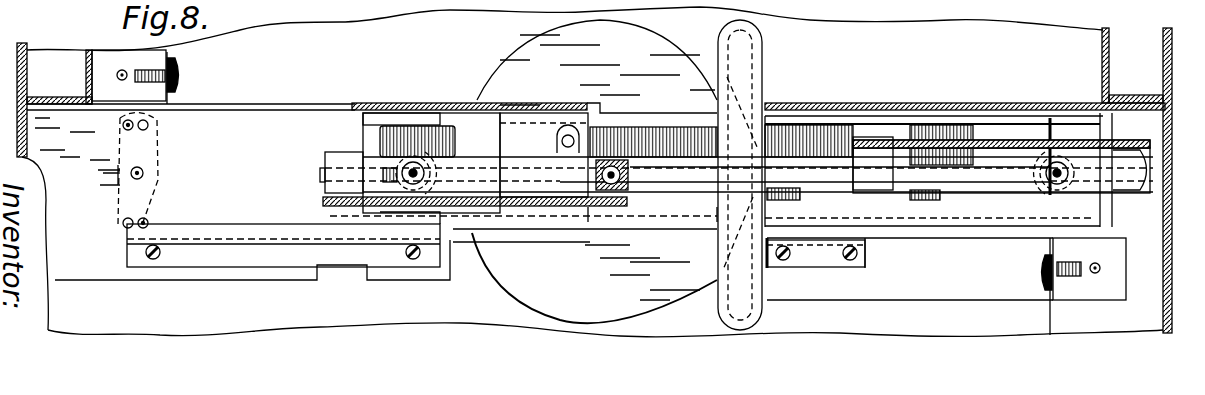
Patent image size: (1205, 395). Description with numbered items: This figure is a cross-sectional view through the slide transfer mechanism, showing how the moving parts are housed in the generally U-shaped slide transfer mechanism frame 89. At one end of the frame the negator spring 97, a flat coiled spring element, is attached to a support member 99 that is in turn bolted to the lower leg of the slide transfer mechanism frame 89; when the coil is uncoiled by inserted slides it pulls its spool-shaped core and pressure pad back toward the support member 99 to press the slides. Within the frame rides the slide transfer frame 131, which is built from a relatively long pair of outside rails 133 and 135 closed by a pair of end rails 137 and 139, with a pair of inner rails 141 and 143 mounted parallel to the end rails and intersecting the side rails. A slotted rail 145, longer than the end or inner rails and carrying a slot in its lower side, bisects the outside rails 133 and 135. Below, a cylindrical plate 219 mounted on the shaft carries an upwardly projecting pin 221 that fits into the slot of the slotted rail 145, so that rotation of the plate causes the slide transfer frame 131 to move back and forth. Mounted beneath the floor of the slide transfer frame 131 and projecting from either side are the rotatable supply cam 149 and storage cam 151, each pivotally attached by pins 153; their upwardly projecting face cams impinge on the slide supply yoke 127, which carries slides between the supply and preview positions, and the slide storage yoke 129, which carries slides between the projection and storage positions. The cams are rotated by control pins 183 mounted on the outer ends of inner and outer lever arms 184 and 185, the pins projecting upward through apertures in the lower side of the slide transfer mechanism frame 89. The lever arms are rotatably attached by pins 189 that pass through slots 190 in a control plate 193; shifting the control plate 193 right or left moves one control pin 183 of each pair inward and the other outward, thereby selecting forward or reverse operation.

The slide transfer mechanism frame 89 is at (412, 105).
The negator spring 97 is at (180, 95).
The support member 99 is at (108, 58).
The slide supply yoke 127 is at (970, 125).
The slide storage yoke 129 is at (523, 213).
The slide transfer frame 131 is at (504, 249).
The outside rail 133 is at (657, 230).
The outside rail 135 is at (715, 78).
The end rail 137 is at (1112, 240).
The end rail 139 is at (378, 242).
The inner rail 141 is at (908, 206).
The inner rail 143 is at (577, 197).
The slotted rail 145 is at (752, 65).
The supply cam 149 is at (1112, 200).
The storage cam 151 is at (336, 147).
The pin 153 is at (437, 150).
The control pin 183 is at (157, 126).
The inner lever arm 184 is at (122, 124).
The outer lever arm 185 is at (162, 153).
The pin 189 is at (158, 180).
The slot 190 is at (126, 150).
The control plate 193 is at (335, 118).
The cylindrical plate 219 is at (660, 295).
The pin 221 is at (716, 205).